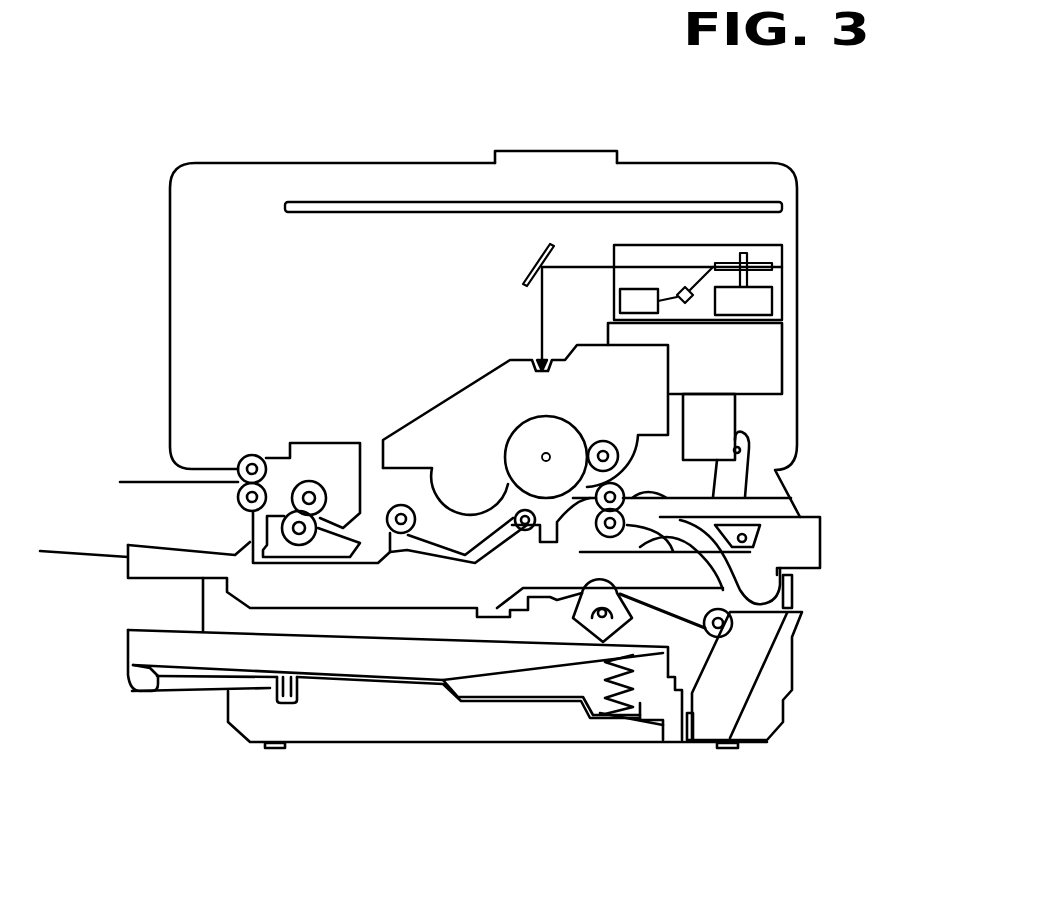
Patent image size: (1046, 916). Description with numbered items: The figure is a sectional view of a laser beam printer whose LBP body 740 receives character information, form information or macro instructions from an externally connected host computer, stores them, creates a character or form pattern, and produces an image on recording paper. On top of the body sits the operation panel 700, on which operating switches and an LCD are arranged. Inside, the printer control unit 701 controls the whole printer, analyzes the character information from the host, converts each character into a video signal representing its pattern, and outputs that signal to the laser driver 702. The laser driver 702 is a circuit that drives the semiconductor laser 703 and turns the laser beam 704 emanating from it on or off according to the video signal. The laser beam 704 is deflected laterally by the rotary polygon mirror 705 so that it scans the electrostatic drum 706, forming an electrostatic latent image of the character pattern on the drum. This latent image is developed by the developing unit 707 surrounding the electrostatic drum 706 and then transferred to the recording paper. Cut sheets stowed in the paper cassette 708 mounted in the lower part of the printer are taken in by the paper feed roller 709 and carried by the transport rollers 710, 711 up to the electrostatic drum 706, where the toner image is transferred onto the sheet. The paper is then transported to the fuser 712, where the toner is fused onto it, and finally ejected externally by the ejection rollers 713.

The operation panel 700 is at (540, 152).
The LBP body 740 is at (697, 162).
The printer control unit 701 is at (763, 198).
The laser driver 702 is at (620, 303).
The semiconductor laser 703 is at (703, 320).
The laser beam 704 is at (652, 268).
The rotary polygon mirror 705 is at (773, 263).
The electrostatic drum 706 is at (514, 428).
The developing unit 707 is at (640, 390).
The paper cassette 708 is at (127, 682).
The paper feed roller 709 is at (593, 594).
The transport roller 710 is at (730, 623).
The transport roller 711 is at (593, 555).
The fuser 712 is at (310, 479).
The ejection rollers 713 is at (243, 459).